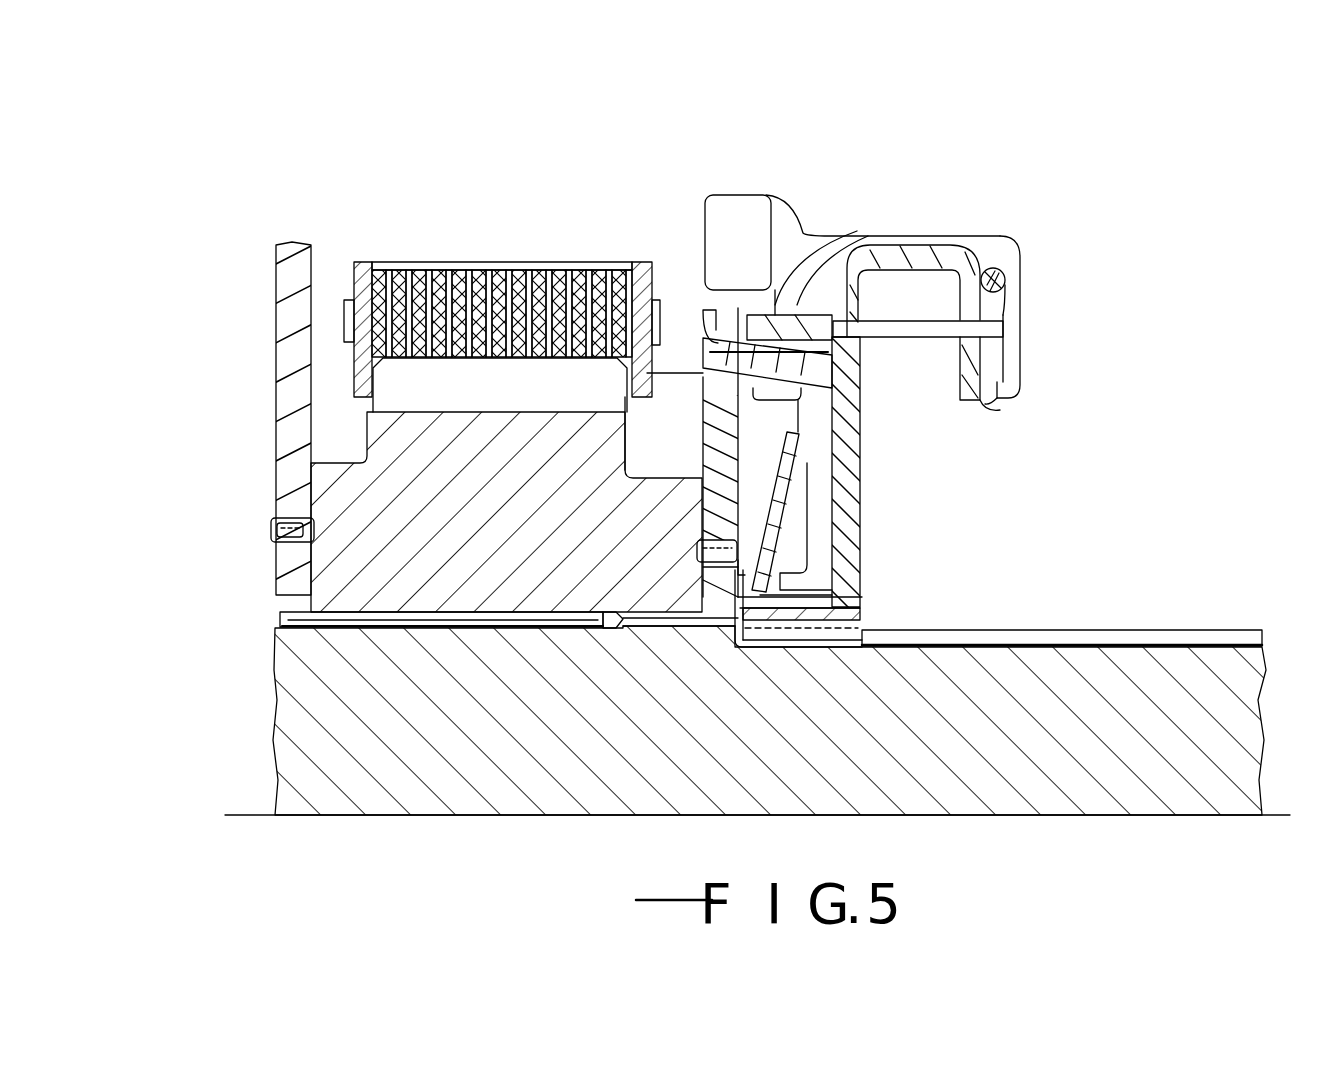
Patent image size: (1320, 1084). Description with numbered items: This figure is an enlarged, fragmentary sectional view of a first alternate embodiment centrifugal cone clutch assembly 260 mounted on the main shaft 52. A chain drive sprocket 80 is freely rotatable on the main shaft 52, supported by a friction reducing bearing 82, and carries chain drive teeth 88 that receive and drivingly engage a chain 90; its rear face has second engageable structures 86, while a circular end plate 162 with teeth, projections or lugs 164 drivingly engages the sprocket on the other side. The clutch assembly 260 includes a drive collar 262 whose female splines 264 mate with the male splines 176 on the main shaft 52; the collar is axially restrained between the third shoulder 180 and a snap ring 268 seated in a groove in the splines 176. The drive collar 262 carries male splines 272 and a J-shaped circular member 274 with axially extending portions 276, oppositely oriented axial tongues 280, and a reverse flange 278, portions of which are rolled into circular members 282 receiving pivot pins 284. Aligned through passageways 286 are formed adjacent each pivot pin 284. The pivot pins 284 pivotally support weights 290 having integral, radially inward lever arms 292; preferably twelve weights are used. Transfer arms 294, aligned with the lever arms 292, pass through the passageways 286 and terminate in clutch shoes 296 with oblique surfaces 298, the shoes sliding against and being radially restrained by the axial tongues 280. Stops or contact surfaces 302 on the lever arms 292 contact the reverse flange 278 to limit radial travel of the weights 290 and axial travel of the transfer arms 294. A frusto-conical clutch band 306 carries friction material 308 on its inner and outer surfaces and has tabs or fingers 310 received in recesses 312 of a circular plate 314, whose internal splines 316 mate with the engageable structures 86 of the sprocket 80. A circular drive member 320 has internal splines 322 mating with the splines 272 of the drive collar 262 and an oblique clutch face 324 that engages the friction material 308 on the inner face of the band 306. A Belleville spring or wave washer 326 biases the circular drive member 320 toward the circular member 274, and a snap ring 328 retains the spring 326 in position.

The main shaft 52 is at (1045, 797).
The chain drive sprocket 80 is at (318, 593).
The friction reducing bearing 82 is at (340, 618).
The second engageable structures 86 is at (712, 555).
The chain drive teeth 88 is at (502, 293).
The chain 90 is at (532, 273).
The circular end plate 162 is at (282, 356).
The structures 164 is at (285, 538).
The male or external splines 176 is at (1085, 632).
The third shoulder 180 is at (752, 635).
The centrifugal cone clutch assembly 260 is at (1003, 180).
The drive collar 262 is at (862, 600).
The female or internal splines 264 is at (868, 622).
The snap ring 268 is at (862, 638).
The male or external splines 272 is at (738, 630).
The circular member 274 is at (862, 467).
The axially extending portions 276 is at (912, 248).
The reverse flange 278 is at (985, 408).
The axial tongues 280 is at (910, 257).
The circular members 282 is at (1010, 280).
The pivot pins 284 is at (1020, 237).
The through passageways 286 is at (858, 362).
The weights 290 is at (798, 215).
The lever arms 292 is at (1030, 322).
The transfer arms 294 is at (897, 330).
The clutch shoes 296 is at (848, 233).
The oblique surfaces 298 is at (802, 228).
The stops or contact surfaces 302 is at (1028, 392).
The frusto-conical clutch band 306 is at (647, 373).
The friction material 308 is at (853, 405).
The tabs or fingers 310 is at (704, 318).
The recesses 312 is at (712, 303).
The circular plate 314 is at (715, 398).
The internal or female splines 316 is at (700, 545).
The circular drive member 320 is at (822, 487).
The female or internal splines 322 is at (840, 523).
The oblique clutch face 324 is at (712, 420).
The Belleville spring or wave washer 326 is at (820, 440).
The snap ring 328 is at (662, 640).